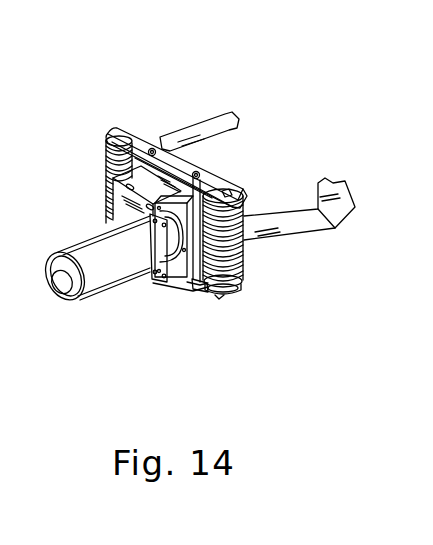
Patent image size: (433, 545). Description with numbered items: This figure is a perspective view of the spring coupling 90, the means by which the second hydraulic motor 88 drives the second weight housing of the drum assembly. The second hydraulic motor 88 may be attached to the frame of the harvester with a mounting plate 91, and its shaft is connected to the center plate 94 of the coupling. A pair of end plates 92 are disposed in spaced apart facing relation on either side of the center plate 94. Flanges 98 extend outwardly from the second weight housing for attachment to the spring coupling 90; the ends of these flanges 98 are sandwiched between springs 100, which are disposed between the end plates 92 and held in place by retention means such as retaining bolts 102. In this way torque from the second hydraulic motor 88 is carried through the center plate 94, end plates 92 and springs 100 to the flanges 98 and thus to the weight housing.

The second hydraulic motor 88 is at (69, 303).
The spring coupling 90 is at (78, 116).
The mounting plate 91 is at (106, 201).
The end plates 92 is at (154, 143).
The center plate 94 is at (182, 266).
The flanges 98 is at (235, 116).
The springs 100 is at (106, 163).
The retaining bolts 102 is at (128, 133).